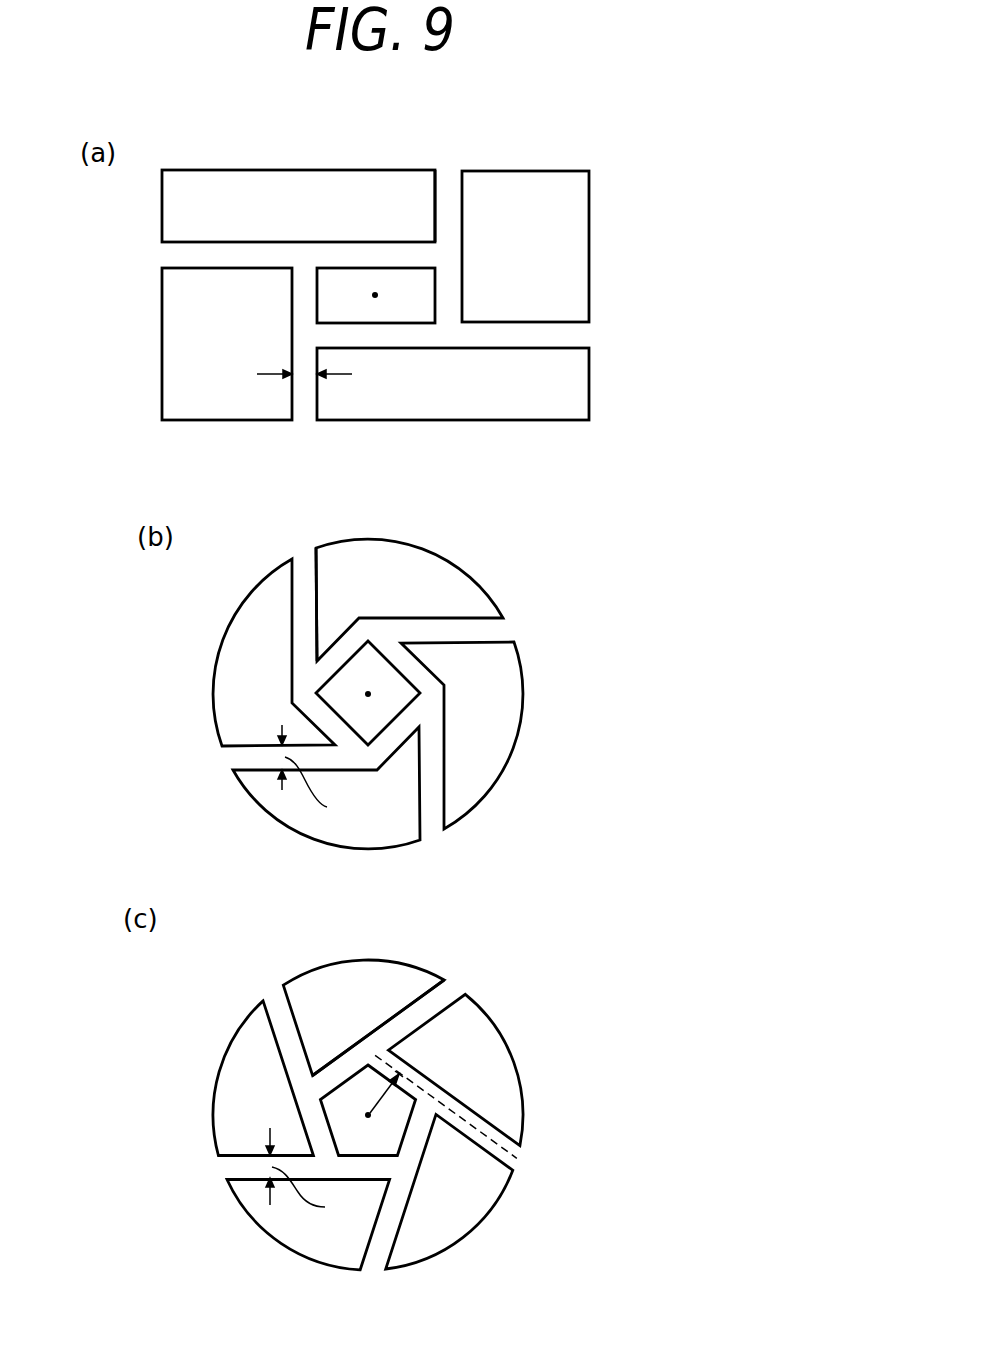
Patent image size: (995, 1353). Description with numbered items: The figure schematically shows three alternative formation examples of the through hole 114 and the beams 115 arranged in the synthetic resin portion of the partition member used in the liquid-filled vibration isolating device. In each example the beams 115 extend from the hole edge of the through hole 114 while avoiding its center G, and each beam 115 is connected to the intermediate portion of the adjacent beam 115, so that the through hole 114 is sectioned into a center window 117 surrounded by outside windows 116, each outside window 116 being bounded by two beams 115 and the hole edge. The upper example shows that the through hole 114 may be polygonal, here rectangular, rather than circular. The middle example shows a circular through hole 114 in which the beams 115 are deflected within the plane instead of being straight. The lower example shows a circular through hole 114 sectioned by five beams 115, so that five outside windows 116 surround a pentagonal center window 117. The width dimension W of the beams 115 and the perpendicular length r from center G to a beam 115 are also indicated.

The through hole 114 is at (435, 662).
The beam 115 is at (435, 210).
The outside window 116 is at (550, 247).
The center window 117 is at (350, 293).